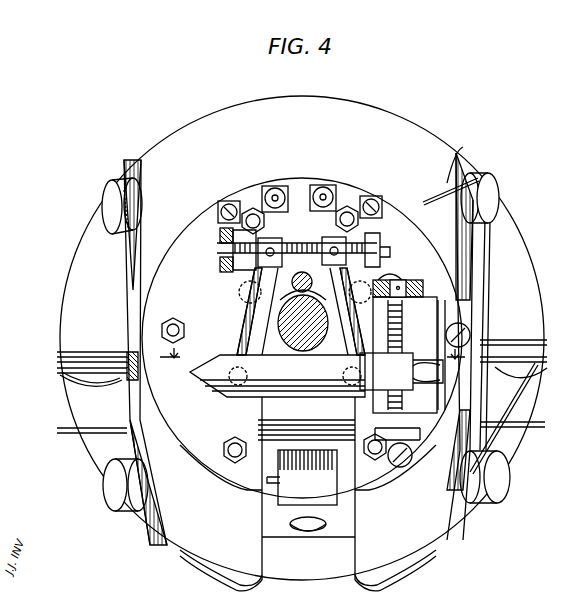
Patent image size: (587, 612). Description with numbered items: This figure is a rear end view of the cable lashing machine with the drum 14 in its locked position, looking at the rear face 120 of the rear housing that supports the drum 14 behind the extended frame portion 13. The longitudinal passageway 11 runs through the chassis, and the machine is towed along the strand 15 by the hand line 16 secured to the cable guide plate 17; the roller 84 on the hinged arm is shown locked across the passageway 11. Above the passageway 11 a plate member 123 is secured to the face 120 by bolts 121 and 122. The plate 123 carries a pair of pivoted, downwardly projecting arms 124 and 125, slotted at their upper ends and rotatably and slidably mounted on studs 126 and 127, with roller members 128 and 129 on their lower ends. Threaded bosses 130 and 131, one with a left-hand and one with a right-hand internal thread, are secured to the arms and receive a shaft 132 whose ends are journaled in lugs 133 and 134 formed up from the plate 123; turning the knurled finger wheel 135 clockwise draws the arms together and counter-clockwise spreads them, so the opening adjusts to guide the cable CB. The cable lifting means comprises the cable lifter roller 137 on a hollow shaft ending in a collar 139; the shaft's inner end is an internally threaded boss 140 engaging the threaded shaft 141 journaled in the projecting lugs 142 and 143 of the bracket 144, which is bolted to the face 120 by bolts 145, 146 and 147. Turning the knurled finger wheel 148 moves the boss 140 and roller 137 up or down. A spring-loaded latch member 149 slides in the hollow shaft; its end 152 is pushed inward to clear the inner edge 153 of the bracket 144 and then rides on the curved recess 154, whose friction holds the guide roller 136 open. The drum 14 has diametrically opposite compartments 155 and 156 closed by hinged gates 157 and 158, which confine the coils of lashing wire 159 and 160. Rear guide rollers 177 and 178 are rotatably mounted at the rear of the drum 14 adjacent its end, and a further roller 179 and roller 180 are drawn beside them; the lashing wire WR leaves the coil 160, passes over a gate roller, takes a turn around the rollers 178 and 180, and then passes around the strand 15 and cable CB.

The passageway 11 is at (306, 345).
The extended frame portion 13 is at (308, 497).
The drum 14 is at (462, 520).
The strand 15 is at (306, 245).
The hand line 16 is at (312, 350).
The cable guide plate 17 is at (340, 528).
The roller 84 is at (306, 422).
The rear face 120 is at (158, 298).
The bolt 121 is at (224, 207).
The bolt 122 is at (376, 200).
The plate member 123 is at (348, 206).
The arm 124 is at (276, 188).
The arm 125 is at (362, 205).
The stud 126 is at (252, 208).
The stud 127 is at (325, 187).
The roller member 128 is at (256, 328).
The roller member 129 is at (343, 322).
The threaded boss 130 is at (240, 257).
The threaded boss 131 is at (372, 246).
The shaft 132 is at (284, 255).
The lug 133 is at (232, 238).
The lug 134 is at (382, 255).
The knurled finger wheel 135 is at (226, 273).
The guide pulley 136 is at (252, 300).
The cable lifter roller 137 is at (324, 388).
The collar 139 is at (205, 385).
The internally threaded boss 140 is at (401, 371).
The threaded shaft 141 is at (398, 342).
The projecting lug 142 is at (415, 300).
The projecting lug 143 is at (415, 440).
The bracket 144 is at (440, 322).
The bolt 145 is at (395, 276).
The bolt 146 is at (440, 330).
The bolt 147 is at (402, 468).
The knurled finger wheel 148 is at (430, 300).
The latch member 149 is at (420, 388).
The latch end 152 is at (480, 385).
The inner edge 153 is at (486, 400).
The curved recess portion 154 is at (500, 355).
The compartment 155 is at (500, 406).
The compartment 156 is at (135, 416).
The gate 157 is at (60, 325).
The gate 158 is at (546, 333).
The coil of lashing wire 159 is at (136, 410).
The coil of lashing wire 160 is at (497, 425).
The guide roller 177 is at (118, 498).
The guide roller 178 is at (498, 493).
The knob 179 is at (118, 182).
The roller 180 is at (492, 190).
The cable CB is at (300, 294).
The lashing wire WR is at (458, 150).